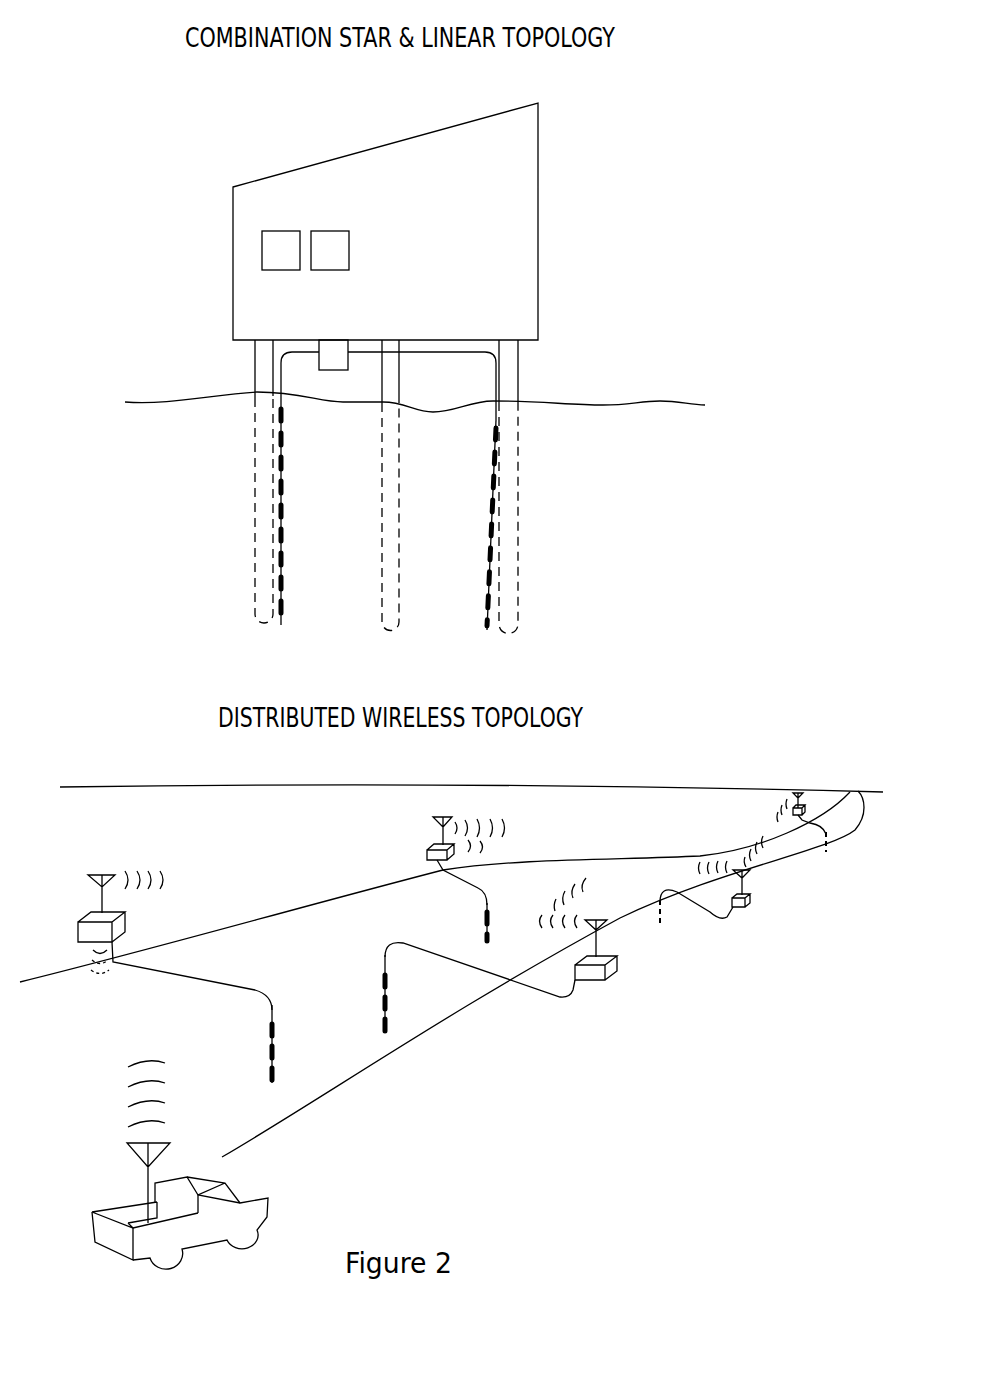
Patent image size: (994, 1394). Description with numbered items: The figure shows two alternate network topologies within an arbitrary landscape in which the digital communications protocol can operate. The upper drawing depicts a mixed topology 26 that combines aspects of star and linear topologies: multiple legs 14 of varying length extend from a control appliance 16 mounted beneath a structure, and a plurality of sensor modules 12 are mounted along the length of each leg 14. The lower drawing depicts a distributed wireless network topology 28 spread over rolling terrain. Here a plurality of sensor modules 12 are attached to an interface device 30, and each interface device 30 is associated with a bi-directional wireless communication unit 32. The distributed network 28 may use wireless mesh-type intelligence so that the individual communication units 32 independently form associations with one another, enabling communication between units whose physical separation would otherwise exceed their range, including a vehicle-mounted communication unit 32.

The sensor modules 12 is at (549, 742).
The legs 14 is at (388, 386).
The control appliance 16 is at (333, 355).
The mixed topology 26 is at (580, 467).
The distributed wireless network topology 28 is at (538, 1083).
The interface device 30 is at (427, 897).
The bi-directional wireless communication unit 32 is at (433, 1008).